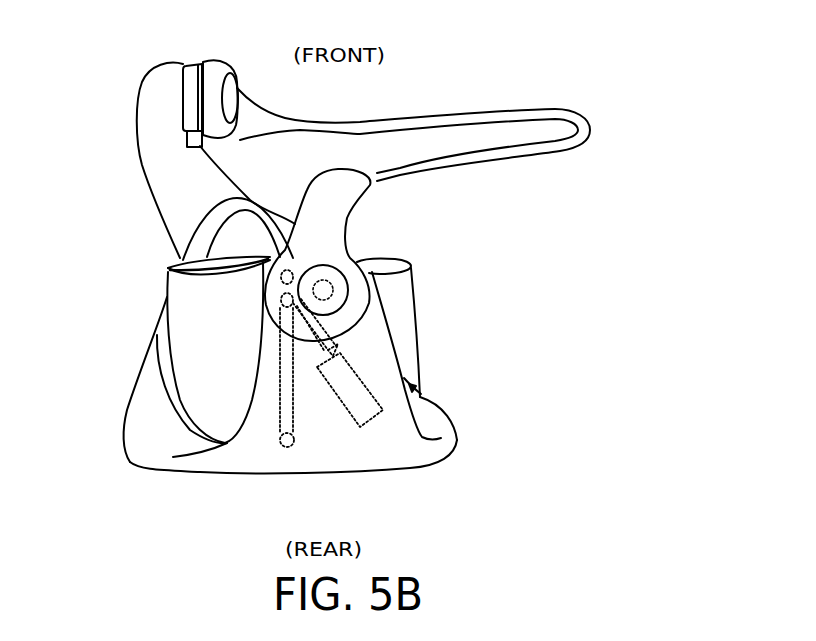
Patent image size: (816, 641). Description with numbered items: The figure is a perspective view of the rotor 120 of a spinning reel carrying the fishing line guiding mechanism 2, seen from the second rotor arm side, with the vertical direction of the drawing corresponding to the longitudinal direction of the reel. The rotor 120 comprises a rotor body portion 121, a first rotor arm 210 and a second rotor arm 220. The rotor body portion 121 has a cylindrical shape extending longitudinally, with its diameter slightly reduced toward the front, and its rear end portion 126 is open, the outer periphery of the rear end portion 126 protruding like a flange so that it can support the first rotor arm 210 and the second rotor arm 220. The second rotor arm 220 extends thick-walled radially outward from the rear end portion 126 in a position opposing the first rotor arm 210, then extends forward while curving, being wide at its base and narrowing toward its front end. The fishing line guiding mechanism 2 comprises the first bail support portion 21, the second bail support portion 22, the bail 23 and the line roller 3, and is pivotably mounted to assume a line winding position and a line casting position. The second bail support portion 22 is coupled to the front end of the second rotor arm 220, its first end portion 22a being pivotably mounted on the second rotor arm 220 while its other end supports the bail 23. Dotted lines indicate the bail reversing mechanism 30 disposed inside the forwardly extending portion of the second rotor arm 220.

The fishing line guiding mechanism 2 is at (398, 83).
The line roller 3 is at (197, 63).
The first bail support portion 21 is at (140, 169).
The second bail support portion 22 is at (348, 220).
The first end portion 22a is at (352, 297).
The bail 23 is at (506, 160).
The bail reversing mechanism 30 is at (359, 364).
The rotor 120 is at (528, 54).
The rotor body portion 121 is at (413, 309).
The rear end portion 126 is at (378, 476).
The first rotor arm 210 is at (141, 300).
The second rotor arm 220 is at (405, 380).